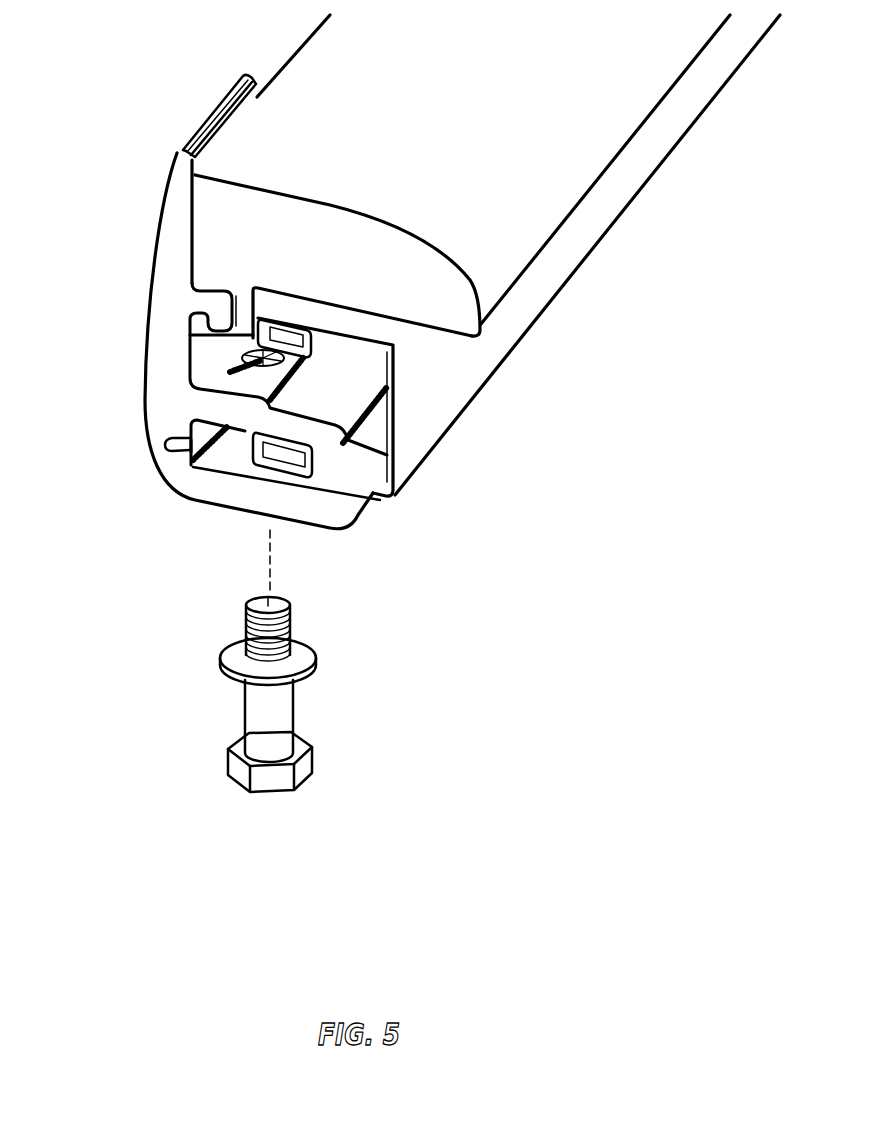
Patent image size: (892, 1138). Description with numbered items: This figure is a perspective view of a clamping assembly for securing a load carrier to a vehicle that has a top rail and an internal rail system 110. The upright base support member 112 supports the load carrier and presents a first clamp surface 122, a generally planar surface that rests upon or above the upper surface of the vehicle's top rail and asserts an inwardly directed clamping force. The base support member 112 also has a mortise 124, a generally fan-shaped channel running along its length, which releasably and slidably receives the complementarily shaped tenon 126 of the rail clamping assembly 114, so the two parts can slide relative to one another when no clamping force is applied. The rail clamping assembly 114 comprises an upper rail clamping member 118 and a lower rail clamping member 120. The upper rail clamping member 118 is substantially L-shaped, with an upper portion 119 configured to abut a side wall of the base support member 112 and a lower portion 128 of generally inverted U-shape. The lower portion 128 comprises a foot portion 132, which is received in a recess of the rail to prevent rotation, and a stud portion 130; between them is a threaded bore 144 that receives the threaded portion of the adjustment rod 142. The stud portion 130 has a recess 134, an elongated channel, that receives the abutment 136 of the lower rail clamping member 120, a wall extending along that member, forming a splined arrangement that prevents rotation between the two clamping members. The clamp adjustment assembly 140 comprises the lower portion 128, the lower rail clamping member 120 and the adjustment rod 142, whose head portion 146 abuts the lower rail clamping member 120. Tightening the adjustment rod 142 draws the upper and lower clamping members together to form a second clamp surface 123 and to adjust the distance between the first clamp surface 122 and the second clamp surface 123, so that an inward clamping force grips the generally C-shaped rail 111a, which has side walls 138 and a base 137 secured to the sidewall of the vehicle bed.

The internal rail system 110 is at (430, 408).
The C-shaped rail 111a is at (582, 225).
The upright base support member 112 is at (597, 113).
The rail clamping assembly 114 is at (170, 568).
The upper rail clamping member 118 is at (157, 310).
The upper portion 119 is at (158, 292).
The lower rail clamping member 120 is at (190, 470).
The first clamp surface 122 is at (420, 320).
The second clamp surface 123 is at (370, 500).
The mortise 124 is at (237, 293).
The tenon 126 is at (198, 280).
The lower portion 128 is at (215, 482).
The stud portion 130 is at (190, 410).
The foot portion 132 is at (355, 473).
The recess 134 is at (175, 440).
The abutment 136 is at (168, 450).
The base 137 is at (470, 375).
The side walls 138 is at (305, 345).
The clamp adjustment assembly 140 is at (283, 715).
The adjustment rod 142 is at (256, 700).
The threaded bore 144 is at (250, 355).
The head portion 146 is at (243, 775).